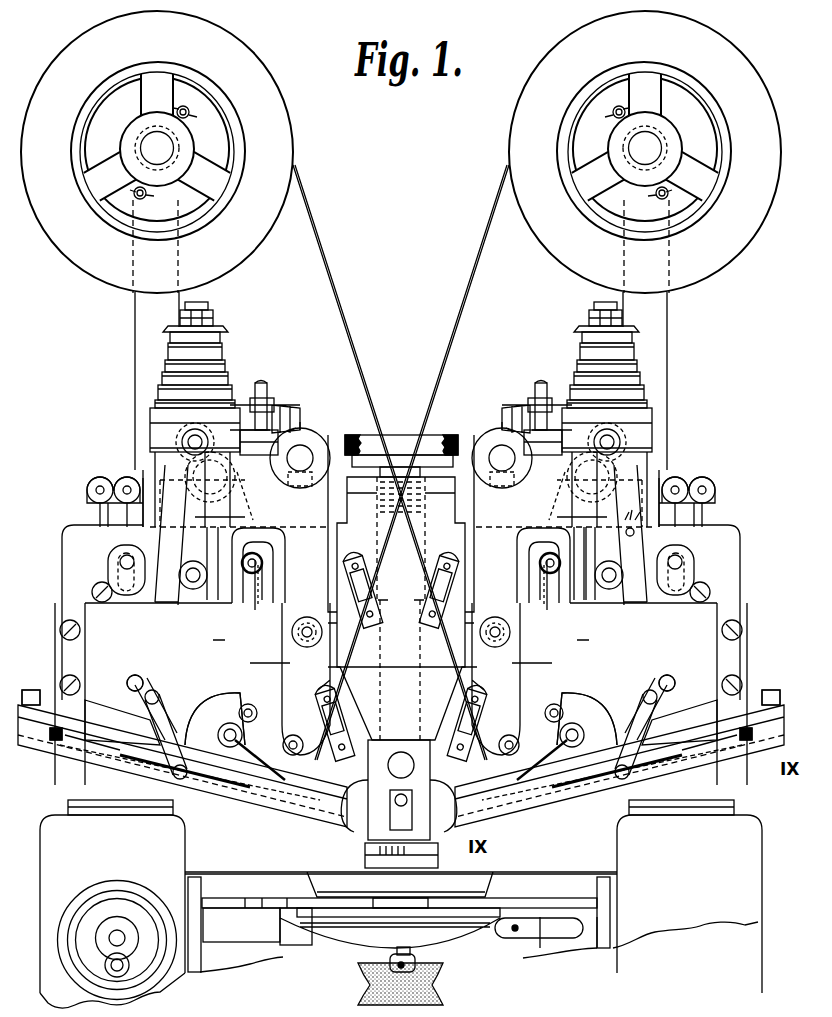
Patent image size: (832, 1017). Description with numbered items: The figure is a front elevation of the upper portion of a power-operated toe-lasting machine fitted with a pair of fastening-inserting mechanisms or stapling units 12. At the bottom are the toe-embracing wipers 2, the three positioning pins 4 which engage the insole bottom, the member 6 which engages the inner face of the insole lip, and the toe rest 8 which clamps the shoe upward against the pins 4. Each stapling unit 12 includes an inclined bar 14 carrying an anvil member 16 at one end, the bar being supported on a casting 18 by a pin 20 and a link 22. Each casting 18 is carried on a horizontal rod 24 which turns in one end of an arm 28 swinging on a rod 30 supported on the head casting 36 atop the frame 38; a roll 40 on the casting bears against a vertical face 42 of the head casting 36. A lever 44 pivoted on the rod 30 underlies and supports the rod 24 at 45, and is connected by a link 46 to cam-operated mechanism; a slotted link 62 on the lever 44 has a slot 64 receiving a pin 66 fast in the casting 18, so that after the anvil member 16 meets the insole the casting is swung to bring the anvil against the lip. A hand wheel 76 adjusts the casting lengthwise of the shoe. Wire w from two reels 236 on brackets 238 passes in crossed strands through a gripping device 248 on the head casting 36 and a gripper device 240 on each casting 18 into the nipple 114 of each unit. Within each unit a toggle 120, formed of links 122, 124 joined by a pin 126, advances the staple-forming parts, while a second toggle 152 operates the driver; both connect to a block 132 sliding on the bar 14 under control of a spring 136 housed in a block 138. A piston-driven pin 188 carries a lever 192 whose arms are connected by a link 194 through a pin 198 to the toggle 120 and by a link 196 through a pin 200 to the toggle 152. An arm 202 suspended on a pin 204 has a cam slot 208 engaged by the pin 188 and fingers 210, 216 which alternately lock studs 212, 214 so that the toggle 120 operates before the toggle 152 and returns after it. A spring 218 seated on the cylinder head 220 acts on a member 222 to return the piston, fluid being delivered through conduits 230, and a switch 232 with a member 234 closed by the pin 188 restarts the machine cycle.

The toe-embracing wipers 2 is at (455, 920).
The pins 4 is at (401, 884).
The member 6 is at (438, 858).
The toe rest 8 is at (445, 991).
The fastening-inserting mechanisms 12 is at (576, 806).
The bar 14 is at (742, 716).
The anvil member 16 is at (405, 818).
The casting 18 is at (730, 578).
The pin 20 is at (507, 740).
The link 22 is at (735, 658).
The horizontal rod 24 is at (500, 456).
The arm 28 is at (510, 432).
The rod 30 is at (580, 476).
The head casting 36 is at (363, 500).
The frame 38 is at (735, 881).
The roll 40 is at (495, 626).
The vertical face 42 is at (401, 679).
The lever 44 is at (655, 472).
The supporting engagement of lever with rod 45 is at (497, 460).
The link 46 is at (710, 512).
The link 62 is at (700, 504).
The slot 64 is at (700, 528).
The pin 66 is at (676, 564).
The hand wheel 76 is at (512, 430).
The nipple 114 is at (400, 725).
The toggle 120 is at (582, 716).
The link 122 is at (562, 748).
The link 124 is at (604, 736).
The pin 126 is at (546, 768).
The block 132 is at (725, 745).
The spring 136 is at (750, 742).
The block 138 is at (775, 745).
The toggle 152 is at (652, 692).
The pin 188 is at (607, 560).
The lever 192 is at (660, 580).
The link 194 is at (401, 670).
The link 196 is at (668, 676).
The pin 198 is at (550, 716).
The pin 200 is at (652, 690).
The arm 202 is at (604, 518).
The pin 204 is at (405, 434).
The cam slot 208 is at (405, 656).
The finger 210 is at (637, 605).
The stud 212 is at (712, 592).
The stud 214 is at (546, 592).
The finger 216 is at (540, 604).
The spring 218 is at (636, 371).
The head 220 is at (648, 423).
The member 222 is at (640, 331).
The conduits 230 is at (540, 386).
The switch 232 is at (636, 532).
The member 234 is at (574, 540).
The reels 236 is at (733, 235).
The brackets 238 is at (660, 298).
The gripper device 240 is at (455, 724).
The gripping device 248 is at (422, 602).
The wire w is at (466, 308).